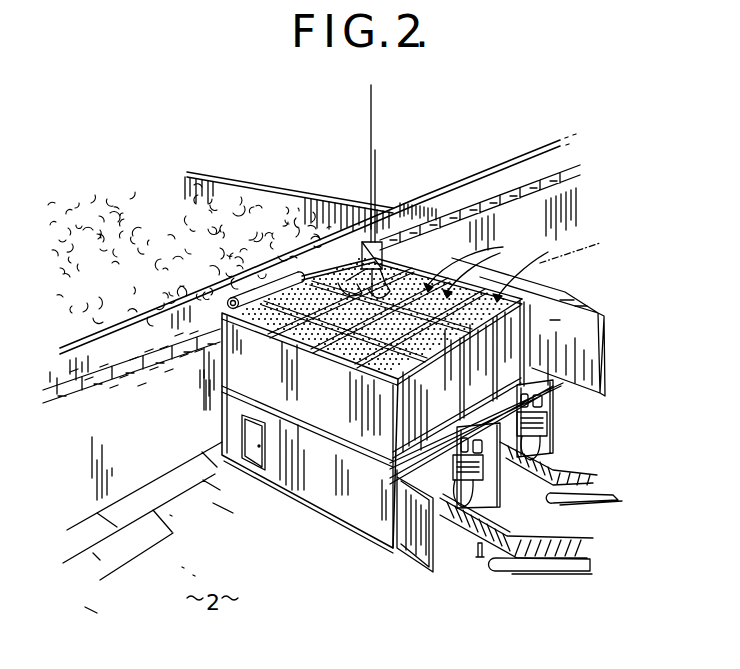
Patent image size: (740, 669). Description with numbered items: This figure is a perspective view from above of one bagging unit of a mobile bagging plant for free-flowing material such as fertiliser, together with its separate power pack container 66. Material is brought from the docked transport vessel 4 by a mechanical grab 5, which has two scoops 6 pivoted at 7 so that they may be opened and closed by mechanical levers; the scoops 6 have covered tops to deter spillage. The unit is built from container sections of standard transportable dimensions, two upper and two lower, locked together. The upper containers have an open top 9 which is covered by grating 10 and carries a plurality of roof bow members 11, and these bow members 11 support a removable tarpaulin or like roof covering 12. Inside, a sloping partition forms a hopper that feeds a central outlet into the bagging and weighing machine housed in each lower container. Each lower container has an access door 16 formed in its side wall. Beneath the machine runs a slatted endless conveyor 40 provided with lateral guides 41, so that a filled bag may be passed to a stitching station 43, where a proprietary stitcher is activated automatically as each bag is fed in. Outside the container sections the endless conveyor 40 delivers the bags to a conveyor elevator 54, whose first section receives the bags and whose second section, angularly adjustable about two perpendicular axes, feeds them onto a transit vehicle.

The docked transport vessel 4 is at (232, 195).
The mechanical grab 5 is at (366, 243).
The pivot 7 is at (379, 242).
The roof covering 12 is at (272, 283).
The scoops 6 is at (320, 318).
The grating 10 is at (367, 352).
The roof bow members 11 is at (478, 264).
The open top 9 is at (548, 252).
The power pack container 66 is at (581, 349).
The stitching station 43 is at (543, 412).
The access door 16 is at (247, 438).
The lateral guides 41 is at (418, 466).
The slatted endless conveyor 40 is at (477, 530).
The conveyor elevator 54 is at (565, 552).